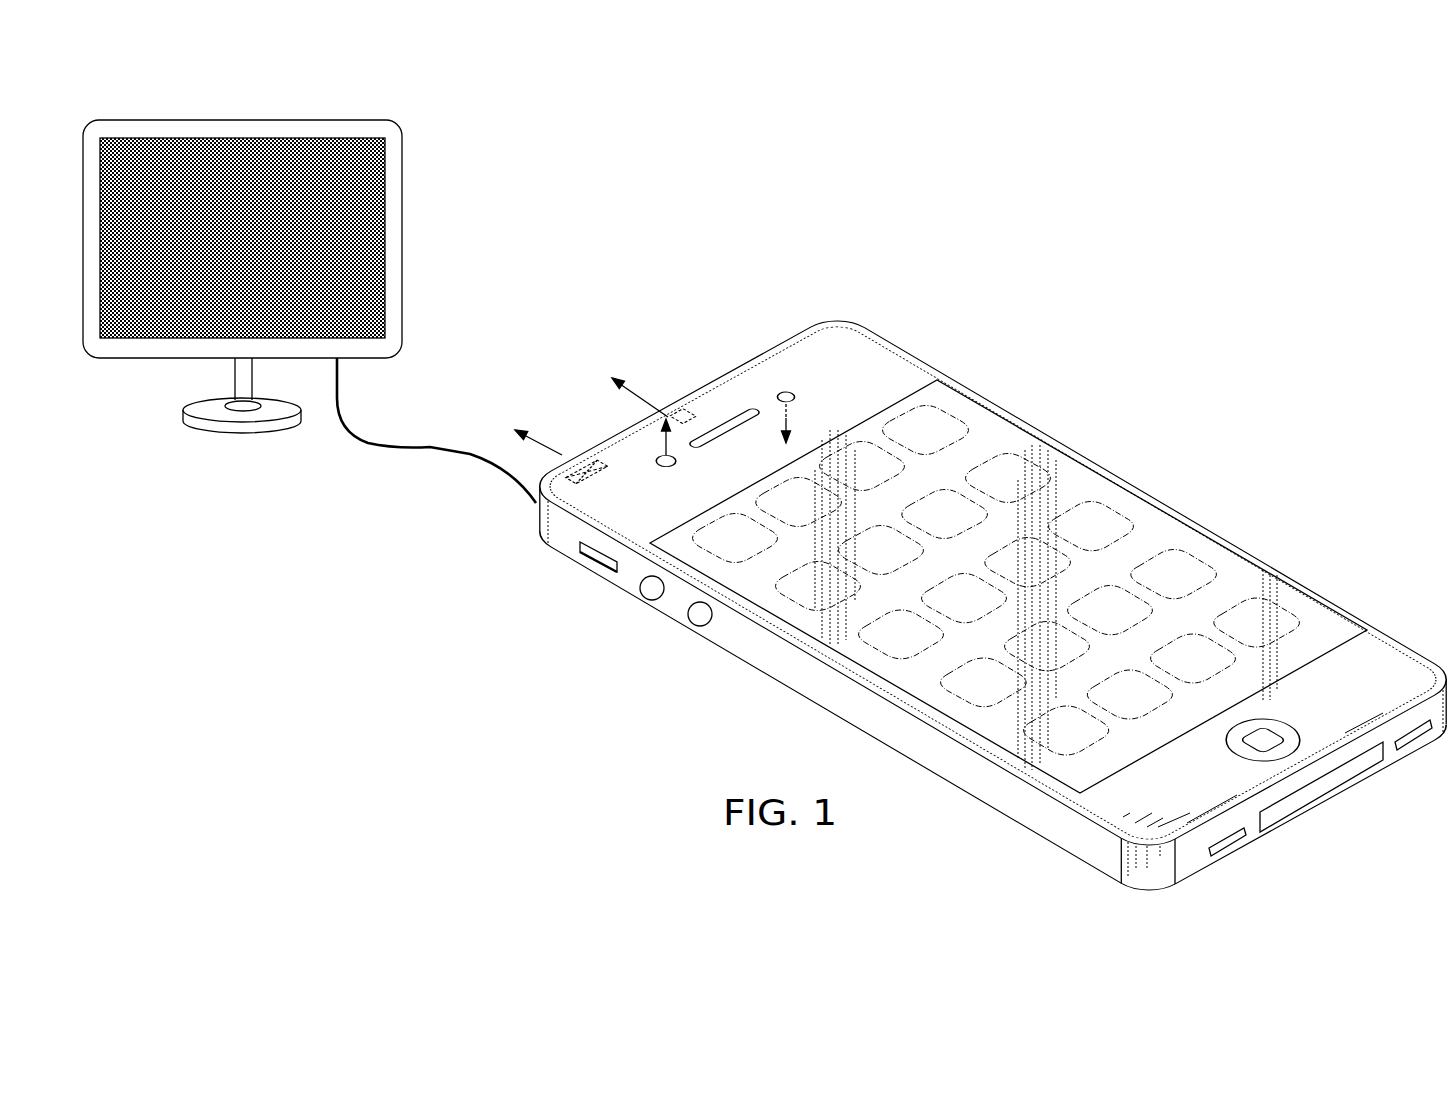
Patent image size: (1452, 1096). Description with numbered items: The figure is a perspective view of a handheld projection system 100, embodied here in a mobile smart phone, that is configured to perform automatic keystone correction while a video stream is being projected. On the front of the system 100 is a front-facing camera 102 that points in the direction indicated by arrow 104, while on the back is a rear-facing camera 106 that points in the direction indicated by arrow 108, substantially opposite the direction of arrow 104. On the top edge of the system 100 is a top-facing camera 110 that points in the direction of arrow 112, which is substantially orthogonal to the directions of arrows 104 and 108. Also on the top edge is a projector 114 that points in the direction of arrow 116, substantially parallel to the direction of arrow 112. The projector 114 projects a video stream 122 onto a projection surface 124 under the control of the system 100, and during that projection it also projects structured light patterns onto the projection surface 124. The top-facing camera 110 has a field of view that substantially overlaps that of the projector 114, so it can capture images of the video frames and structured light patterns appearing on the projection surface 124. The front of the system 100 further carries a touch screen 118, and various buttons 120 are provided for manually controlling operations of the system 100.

The handheld projection system 100 is at (1103, 463).
The front-facing camera 102 is at (678, 462).
The arrow 104 is at (658, 463).
The rear-facing camera 106 is at (791, 393).
The arrow 108 is at (797, 407).
The top-facing camera 110 is at (677, 407).
The arrow 112 is at (640, 392).
The projector 114 is at (590, 458).
The arrow 116 is at (538, 448).
The touch screen 118 is at (1173, 545).
The buttons 120 is at (585, 573).
The video stream 122 is at (142, 148).
The projection surface 124 is at (242, 120).